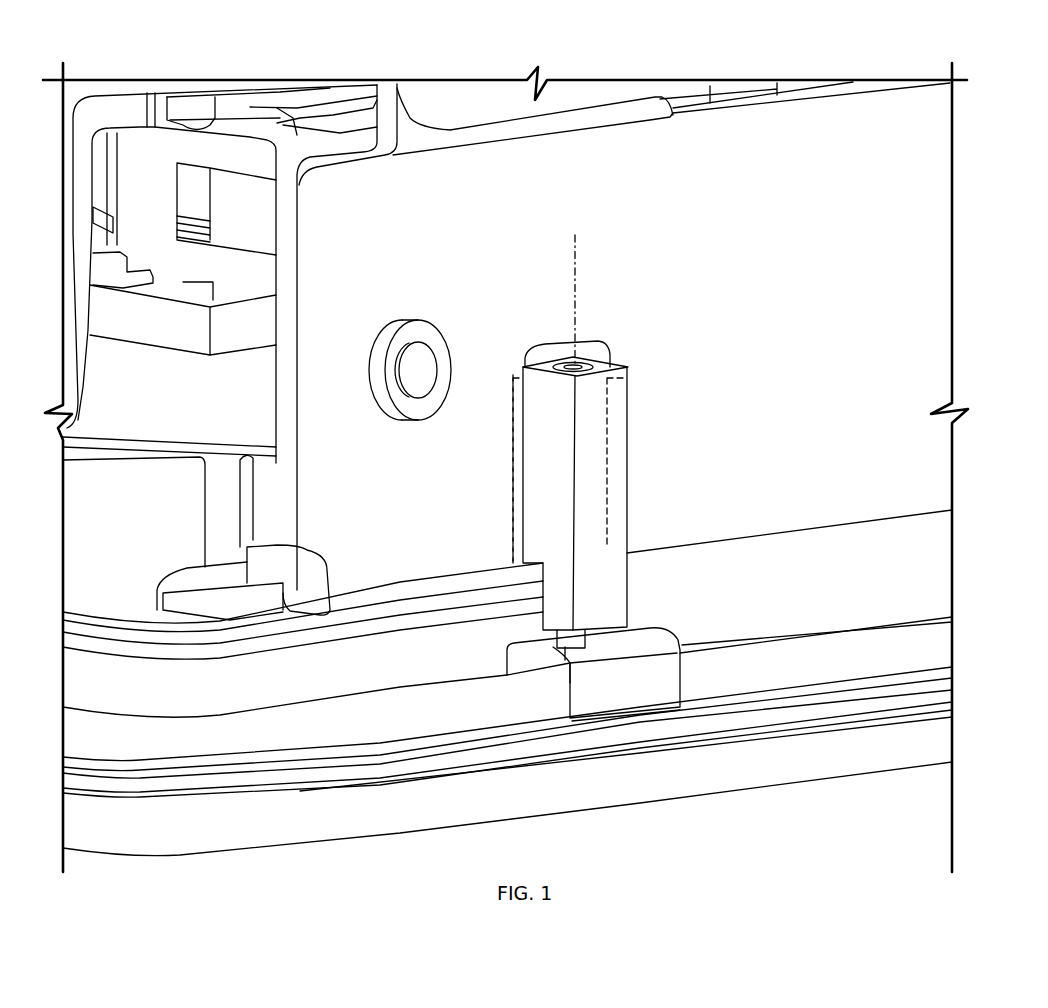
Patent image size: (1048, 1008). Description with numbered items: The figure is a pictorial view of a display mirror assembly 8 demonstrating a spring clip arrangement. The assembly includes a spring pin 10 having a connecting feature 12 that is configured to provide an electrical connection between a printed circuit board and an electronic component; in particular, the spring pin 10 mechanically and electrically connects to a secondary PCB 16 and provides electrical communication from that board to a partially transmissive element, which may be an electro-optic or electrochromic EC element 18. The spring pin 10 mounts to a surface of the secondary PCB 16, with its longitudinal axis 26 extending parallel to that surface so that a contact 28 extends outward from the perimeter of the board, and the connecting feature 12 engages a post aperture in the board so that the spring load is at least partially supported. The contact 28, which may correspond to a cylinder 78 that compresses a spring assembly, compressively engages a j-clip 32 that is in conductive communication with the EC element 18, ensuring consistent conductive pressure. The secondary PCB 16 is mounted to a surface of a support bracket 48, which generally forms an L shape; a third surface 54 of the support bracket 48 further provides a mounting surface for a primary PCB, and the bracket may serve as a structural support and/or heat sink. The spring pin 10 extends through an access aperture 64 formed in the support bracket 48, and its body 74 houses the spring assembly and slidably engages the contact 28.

The display mirror assembly 8 is at (978, 98).
The third surface 54 is at (197, 130).
The support bracket 48 is at (330, 123).
The longitudinal axis 26 is at (572, 263).
The access aperture 64 is at (560, 345).
The secondary PCB 16 is at (582, 352).
The spring pin 10 is at (619, 462).
The body 74 is at (619, 462).
The connecting feature 12 is at (512, 420).
The EC element 18 is at (926, 646).
The j-clip 32 is at (663, 676).
The contact 28 is at (497, 678).
The cylinder 78 is at (556, 640).